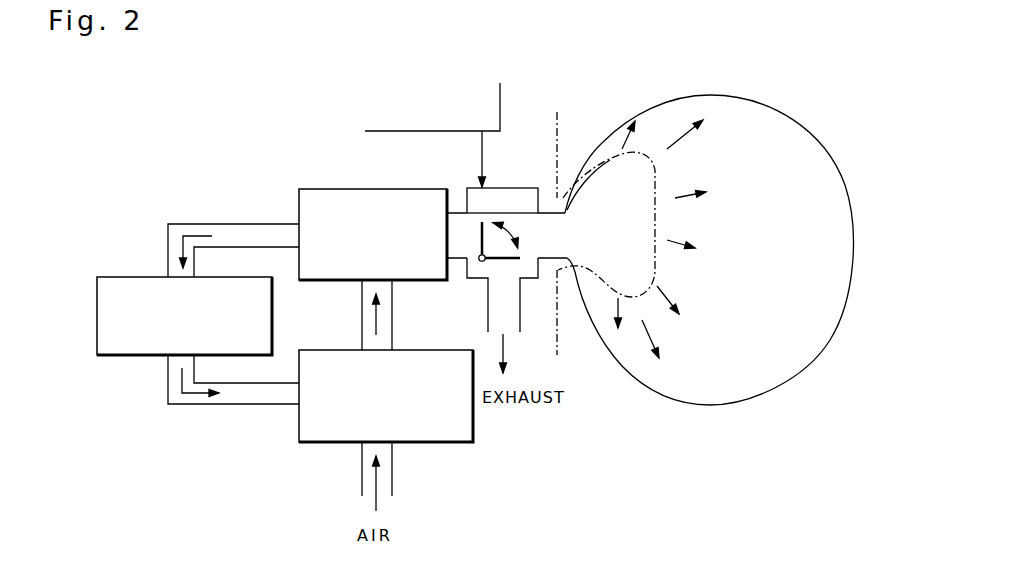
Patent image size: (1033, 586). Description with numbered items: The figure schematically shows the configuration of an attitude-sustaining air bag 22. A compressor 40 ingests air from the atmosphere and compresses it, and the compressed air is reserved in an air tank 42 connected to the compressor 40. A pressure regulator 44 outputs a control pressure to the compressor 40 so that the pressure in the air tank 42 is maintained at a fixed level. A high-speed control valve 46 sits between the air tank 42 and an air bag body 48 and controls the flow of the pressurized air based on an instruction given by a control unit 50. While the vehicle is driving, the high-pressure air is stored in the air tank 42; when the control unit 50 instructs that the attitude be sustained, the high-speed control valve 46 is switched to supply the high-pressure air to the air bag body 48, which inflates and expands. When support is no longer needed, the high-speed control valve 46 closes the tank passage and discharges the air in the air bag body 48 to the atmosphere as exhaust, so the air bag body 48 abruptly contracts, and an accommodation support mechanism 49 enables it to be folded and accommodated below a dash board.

The attitude-sustaining air bag 22 is at (705, 272).
The compressor 40 is at (318, 442).
The air tank 42 is at (348, 189).
The pressure regulator 44 is at (113, 355).
The high-speed control valve 46 is at (522, 188).
The air bag body 48 is at (672, 405).
The accommodation support mechanism 49 is at (557, 345).
The control unit 50 is at (500, 105).